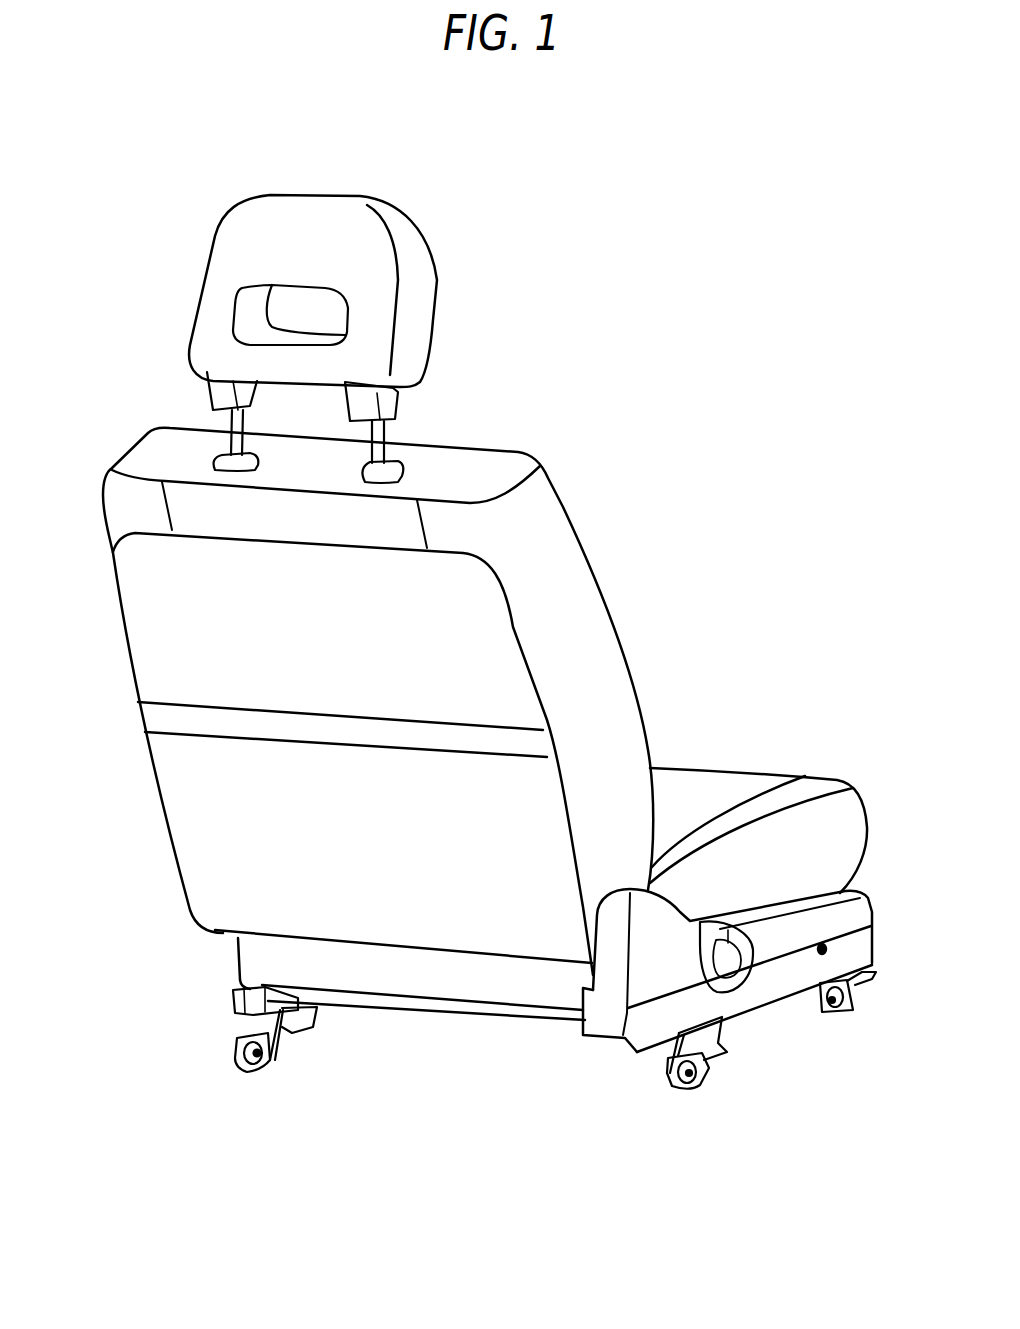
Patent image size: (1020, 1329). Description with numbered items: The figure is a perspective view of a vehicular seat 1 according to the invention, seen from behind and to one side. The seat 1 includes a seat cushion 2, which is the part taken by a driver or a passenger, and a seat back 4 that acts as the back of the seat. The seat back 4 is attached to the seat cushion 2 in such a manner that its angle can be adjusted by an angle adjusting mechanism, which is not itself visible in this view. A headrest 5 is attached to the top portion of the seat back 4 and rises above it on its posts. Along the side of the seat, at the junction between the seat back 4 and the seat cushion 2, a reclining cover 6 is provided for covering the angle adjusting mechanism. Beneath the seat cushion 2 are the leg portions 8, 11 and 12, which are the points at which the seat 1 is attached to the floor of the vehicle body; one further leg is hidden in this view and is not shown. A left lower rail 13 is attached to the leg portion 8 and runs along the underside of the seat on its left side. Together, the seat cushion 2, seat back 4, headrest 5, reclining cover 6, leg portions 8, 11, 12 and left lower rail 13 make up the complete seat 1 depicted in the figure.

The seat 1 is at (678, 320).
The seat cushion 2 is at (760, 766).
The seat back 4 is at (563, 507).
The headrest 5 is at (437, 283).
The reclining cover 6 is at (773, 1003).
The leg portion 8 is at (272, 1058).
The leg portion 11 is at (858, 1002).
The leg portion 12 is at (673, 1090).
The left lower rail 13 is at (232, 1003).